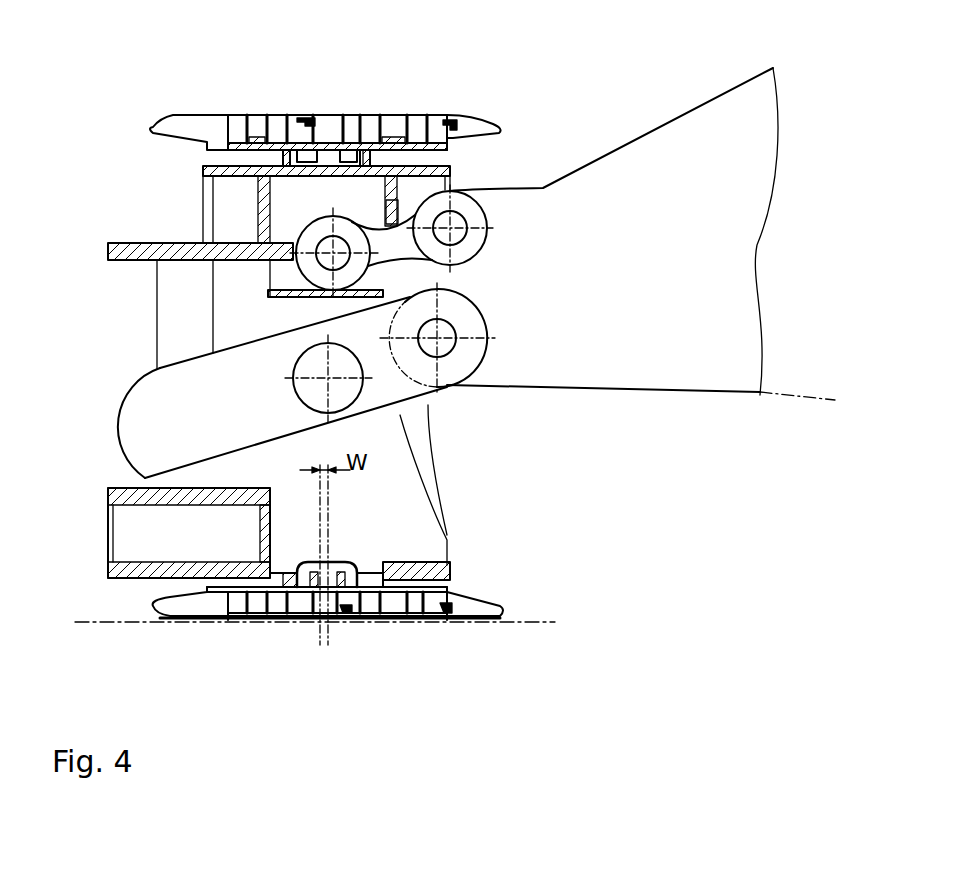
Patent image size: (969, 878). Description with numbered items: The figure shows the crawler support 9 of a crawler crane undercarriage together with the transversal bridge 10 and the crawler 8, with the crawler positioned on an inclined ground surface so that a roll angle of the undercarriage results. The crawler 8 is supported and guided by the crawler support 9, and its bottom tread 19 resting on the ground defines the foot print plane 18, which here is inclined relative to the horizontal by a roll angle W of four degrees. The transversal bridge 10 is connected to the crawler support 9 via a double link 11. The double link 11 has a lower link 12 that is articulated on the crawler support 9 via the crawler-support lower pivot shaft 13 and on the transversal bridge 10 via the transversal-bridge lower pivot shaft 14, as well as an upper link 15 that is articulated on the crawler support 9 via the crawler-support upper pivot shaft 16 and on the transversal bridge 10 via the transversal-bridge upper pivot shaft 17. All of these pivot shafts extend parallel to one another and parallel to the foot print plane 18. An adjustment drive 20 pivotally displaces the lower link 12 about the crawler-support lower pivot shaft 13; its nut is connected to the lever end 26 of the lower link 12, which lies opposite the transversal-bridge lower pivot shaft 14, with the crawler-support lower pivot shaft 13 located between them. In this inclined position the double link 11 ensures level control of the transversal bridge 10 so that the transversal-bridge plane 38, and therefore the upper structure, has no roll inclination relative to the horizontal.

The crawler 8 is at (255, 125).
The crawler support 9 is at (287, 532).
The transversal bridge 10 is at (618, 163).
The double link 11 is at (396, 246).
The lower link 12 is at (152, 445).
The crawler-support lower pivot shaft 13 is at (328, 378).
The transversal-bridge lower pivot shaft 14 is at (438, 340).
The upper link 15 is at (386, 228).
The crawler-support upper pivot shaft 16 is at (332, 250).
The transversal-bridge upper pivot shaft 17 is at (452, 226).
The foot print plane 18 is at (140, 623).
The bottom tread 19 is at (193, 608).
The adjustment drive 20 is at (175, 307).
The lever end 26 is at (135, 415).
The transversal-bridge plane 38 is at (798, 403).